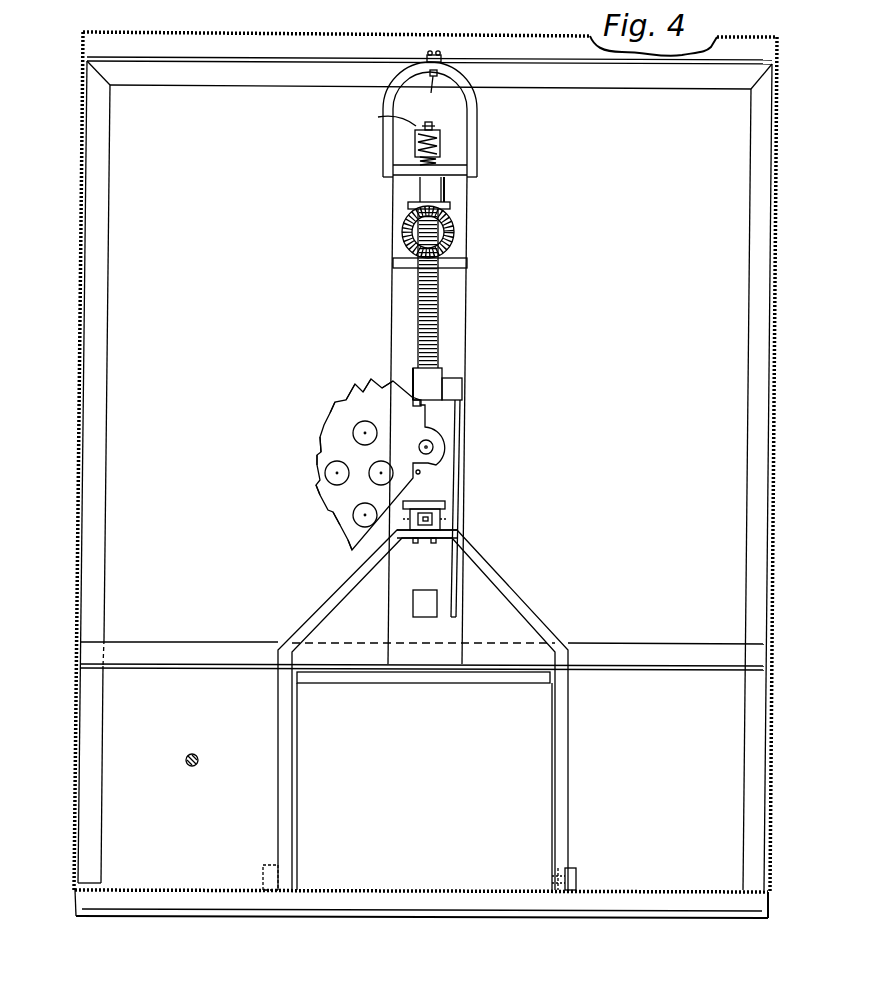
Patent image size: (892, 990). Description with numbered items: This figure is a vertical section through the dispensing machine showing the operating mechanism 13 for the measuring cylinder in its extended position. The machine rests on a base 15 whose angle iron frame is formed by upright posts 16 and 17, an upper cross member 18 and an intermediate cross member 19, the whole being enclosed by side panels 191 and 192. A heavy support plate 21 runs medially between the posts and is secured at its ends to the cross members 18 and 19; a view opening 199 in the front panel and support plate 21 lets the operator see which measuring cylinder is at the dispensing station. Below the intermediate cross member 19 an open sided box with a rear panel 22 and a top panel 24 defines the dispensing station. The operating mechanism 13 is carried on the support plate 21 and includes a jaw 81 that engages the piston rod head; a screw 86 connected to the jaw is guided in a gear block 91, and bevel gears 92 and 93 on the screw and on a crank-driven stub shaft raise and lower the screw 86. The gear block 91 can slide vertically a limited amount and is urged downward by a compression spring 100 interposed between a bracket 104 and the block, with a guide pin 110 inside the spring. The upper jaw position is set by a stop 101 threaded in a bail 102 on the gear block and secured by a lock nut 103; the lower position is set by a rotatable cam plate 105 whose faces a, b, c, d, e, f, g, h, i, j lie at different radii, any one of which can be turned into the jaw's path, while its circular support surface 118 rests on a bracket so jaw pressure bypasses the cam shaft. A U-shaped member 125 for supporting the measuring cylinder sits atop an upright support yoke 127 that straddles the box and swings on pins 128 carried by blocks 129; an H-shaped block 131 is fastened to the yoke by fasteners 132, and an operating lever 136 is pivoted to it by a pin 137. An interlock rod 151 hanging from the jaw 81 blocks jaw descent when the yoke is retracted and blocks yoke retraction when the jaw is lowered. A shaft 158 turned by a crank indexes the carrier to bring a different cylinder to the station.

The operating mechanism 13 is at (470, 382).
The base 15 is at (405, 897).
The upright post 16 is at (95, 611).
The upright post 17 is at (750, 598).
The upper cross member 18 is at (583, 74).
The intermediate cross member 19 is at (590, 650).
The support plate 21 is at (458, 319).
The rear panel 22 is at (528, 796).
The top panel 24 is at (333, 678).
The jaw 81 is at (412, 366).
The screw 86 is at (440, 291).
The gear block 91 is at (462, 262).
The bevel gear 92 is at (450, 206).
The bevel gear 93 is at (455, 228).
The compression spring 100 is at (440, 147).
The stop 101 is at (432, 93).
The bail 102 is at (478, 151).
The lock nut 103 is at (445, 54).
The bracket 104 is at (438, 134).
The cam plate 105 is at (333, 443).
The guide pin 110 is at (383, 118).
The circular support surface 118 is at (440, 447).
The U-shaped member 125 is at (419, 502).
The support yoke 127 is at (525, 612).
The pin 128 is at (560, 865).
The block 129 is at (575, 873).
The H-shaped block 131 is at (442, 522).
The fasteners 132 is at (434, 546).
The operating lever 136 is at (440, 513).
The pin 137 is at (448, 518).
The interlock rod 151 is at (460, 427).
The shaft 158 is at (196, 756).
The side panel 191 is at (74, 385).
The side panel 192 is at (775, 390).
The view opening 199 is at (413, 606).
The cam face a is at (351, 551).
The cam face b is at (338, 525).
The cam face c is at (319, 494).
The cam face d is at (316, 462).
The cam face e is at (320, 435).
The cam face f is at (334, 406).
The cam face g is at (354, 386).
The cam face h is at (372, 378).
The cam face i is at (392, 378).
The cam face j is at (414, 405).